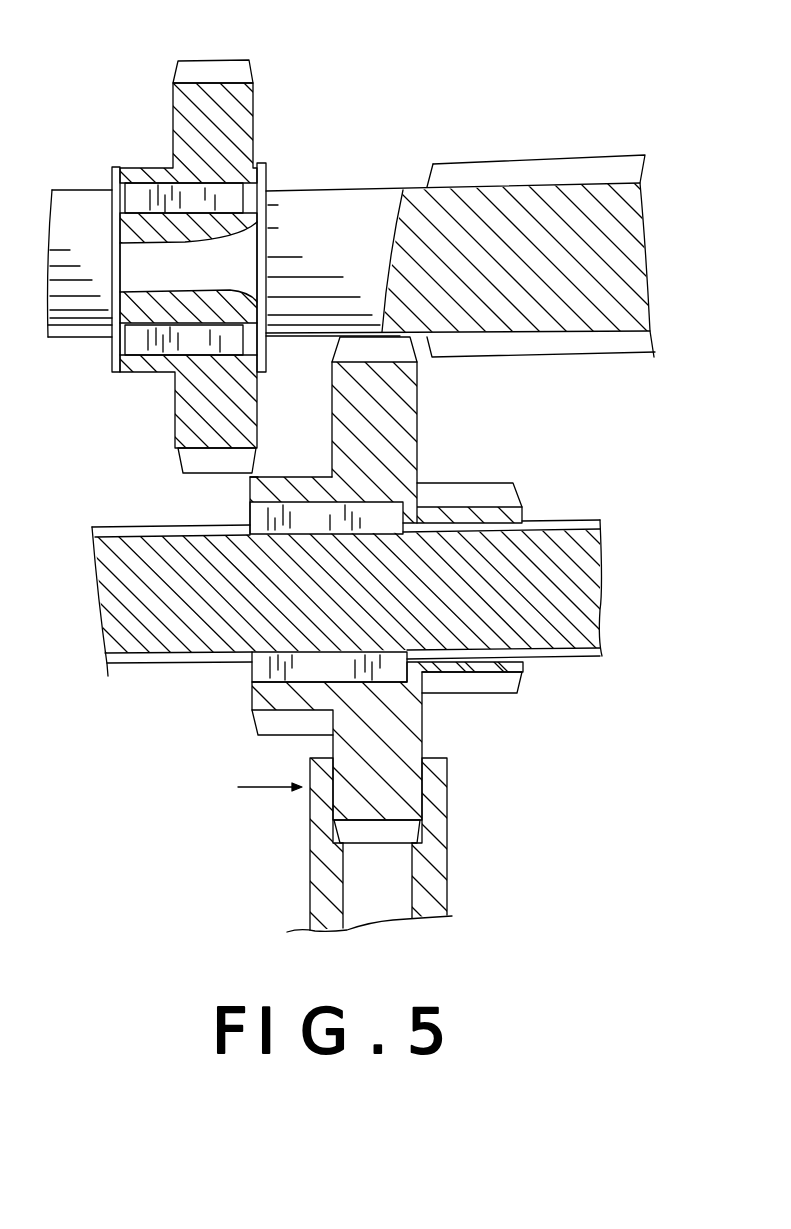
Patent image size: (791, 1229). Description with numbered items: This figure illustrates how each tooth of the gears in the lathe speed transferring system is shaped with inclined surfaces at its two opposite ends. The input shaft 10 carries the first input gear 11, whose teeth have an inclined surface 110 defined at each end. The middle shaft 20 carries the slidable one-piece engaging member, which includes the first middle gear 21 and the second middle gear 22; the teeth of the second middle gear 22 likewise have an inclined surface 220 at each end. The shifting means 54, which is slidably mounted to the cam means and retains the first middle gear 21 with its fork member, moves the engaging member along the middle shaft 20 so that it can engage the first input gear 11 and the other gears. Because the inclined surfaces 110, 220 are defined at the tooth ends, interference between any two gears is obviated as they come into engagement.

The input shaft 10 is at (78, 203).
The first input gear 11 is at (177, 392).
The inclined surface 110 is at (175, 462).
The middle shaft 20 is at (120, 608).
The first middle gear 21 is at (403, 420).
The second middle gear 22 is at (295, 490).
The inclined surface 220 is at (250, 477).
The shifting means 54 is at (320, 875).